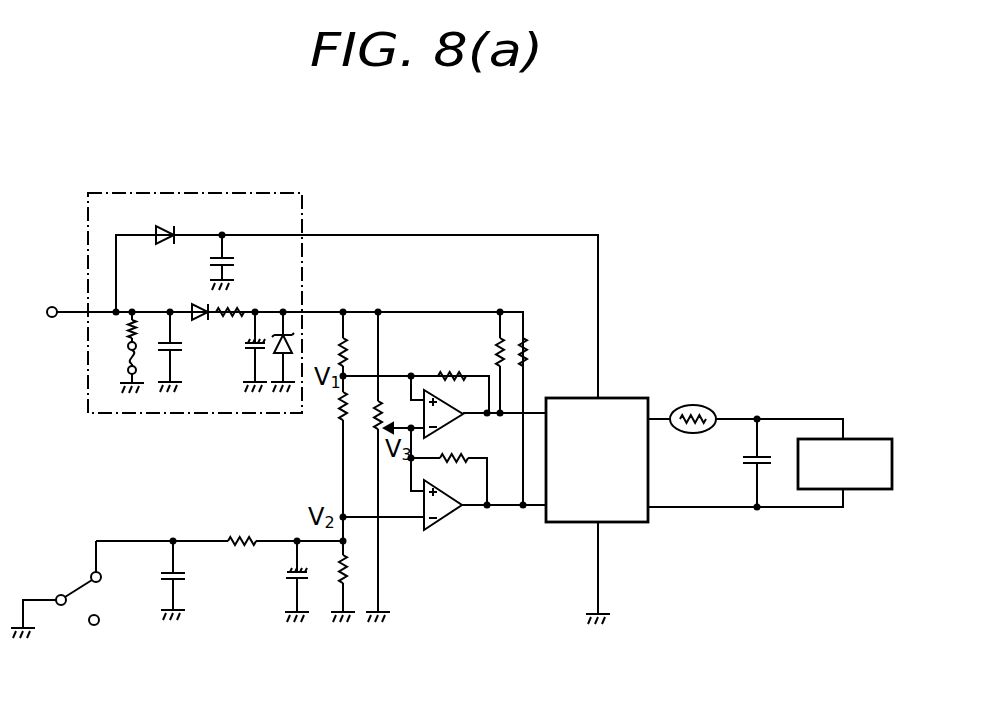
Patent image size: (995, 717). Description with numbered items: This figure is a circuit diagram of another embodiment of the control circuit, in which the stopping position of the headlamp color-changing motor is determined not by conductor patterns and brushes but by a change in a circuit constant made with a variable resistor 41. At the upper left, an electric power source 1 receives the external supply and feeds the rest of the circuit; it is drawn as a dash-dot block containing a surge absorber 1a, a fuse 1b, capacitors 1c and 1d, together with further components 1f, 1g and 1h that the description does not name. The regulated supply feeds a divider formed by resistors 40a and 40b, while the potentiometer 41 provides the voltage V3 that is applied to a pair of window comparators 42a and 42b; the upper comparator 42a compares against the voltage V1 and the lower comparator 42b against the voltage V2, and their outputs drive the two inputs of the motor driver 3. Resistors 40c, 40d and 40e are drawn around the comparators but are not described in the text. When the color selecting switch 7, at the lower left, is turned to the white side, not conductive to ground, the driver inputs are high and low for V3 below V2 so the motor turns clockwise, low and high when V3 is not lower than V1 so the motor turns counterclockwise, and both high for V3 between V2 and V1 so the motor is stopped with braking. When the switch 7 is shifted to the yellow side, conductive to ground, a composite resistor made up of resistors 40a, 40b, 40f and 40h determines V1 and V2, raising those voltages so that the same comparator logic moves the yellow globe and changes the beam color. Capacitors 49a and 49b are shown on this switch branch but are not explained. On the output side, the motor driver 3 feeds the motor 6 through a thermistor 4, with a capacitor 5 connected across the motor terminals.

The electric power source 1 is at (92, 193).
The surge absorber 1a is at (125, 330).
The fuse 1b is at (125, 370).
The capacitor 1c is at (185, 346).
The capacitor 1d is at (202, 305).
The zener diode 1f is at (280, 332).
The diode 1g is at (188, 209).
The capacitor 1h is at (232, 248).
The motor driver 3 is at (626, 398).
The thermistor 4 is at (694, 405).
The capacitor 5 is at (748, 456).
The motor 6 is at (868, 439).
The color selecting switch 7 is at (66, 613).
The resistor 40a is at (334, 350).
The resistor 40b is at (343, 405).
The resistor 40c is at (448, 369).
The resistor 40d is at (487, 349).
The resistor 40e is at (527, 346).
The resistor 40f is at (351, 578).
The resistor 40h is at (233, 548).
The variable resistor 41 is at (372, 440).
The window comparator 42a is at (450, 421).
The window comparator 42b is at (444, 522).
The capacitor 49a is at (158, 580).
The capacitor 49b is at (283, 576).